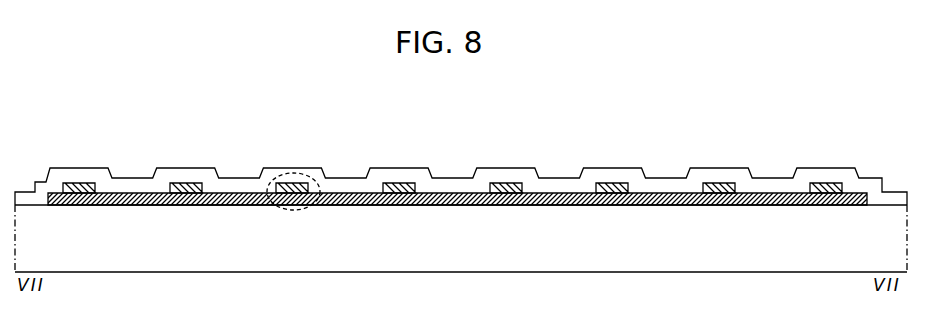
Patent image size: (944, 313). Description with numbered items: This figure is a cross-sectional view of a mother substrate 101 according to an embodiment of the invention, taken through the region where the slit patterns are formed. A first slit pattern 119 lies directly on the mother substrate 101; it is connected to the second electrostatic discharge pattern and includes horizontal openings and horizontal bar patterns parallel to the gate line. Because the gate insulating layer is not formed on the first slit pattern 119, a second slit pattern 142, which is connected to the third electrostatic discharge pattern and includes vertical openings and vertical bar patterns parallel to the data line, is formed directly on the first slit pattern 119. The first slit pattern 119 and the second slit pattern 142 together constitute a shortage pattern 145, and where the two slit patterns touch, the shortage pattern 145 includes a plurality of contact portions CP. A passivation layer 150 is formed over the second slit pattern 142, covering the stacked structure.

The mother substrate 101 is at (873, 260).
The first slit pattern 119 is at (447, 193).
The second slit pattern 142 is at (500, 188).
The shortage pattern 145 is at (512, 90).
The passivation layer 150 is at (600, 176).
The contact portion CP is at (292, 174).